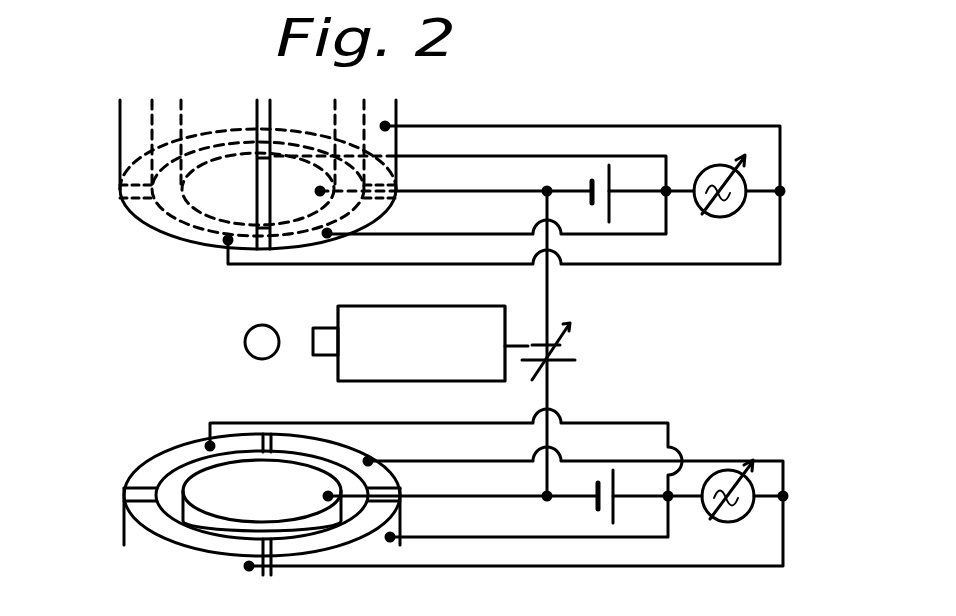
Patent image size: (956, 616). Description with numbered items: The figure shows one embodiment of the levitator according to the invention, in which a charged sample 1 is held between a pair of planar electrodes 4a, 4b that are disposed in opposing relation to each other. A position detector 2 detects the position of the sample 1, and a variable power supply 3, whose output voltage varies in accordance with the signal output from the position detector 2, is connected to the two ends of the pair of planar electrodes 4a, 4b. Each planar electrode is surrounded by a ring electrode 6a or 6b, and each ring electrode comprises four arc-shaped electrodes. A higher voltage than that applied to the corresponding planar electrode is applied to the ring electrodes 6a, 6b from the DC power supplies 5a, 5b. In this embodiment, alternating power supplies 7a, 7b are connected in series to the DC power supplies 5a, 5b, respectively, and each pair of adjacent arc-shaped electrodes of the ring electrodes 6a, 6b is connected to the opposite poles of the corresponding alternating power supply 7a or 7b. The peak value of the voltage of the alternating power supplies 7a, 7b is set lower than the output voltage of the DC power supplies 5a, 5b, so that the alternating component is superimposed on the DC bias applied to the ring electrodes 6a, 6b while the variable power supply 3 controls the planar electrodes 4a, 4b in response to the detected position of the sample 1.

The charged sample 1 is at (273, 322).
The position detector 2 is at (432, 302).
The variable power supply 3 is at (573, 345).
The planar electrode 4a is at (213, 477).
The planar electrode 4b is at (207, 202).
The DC power supply 5a is at (603, 473).
The DC power supply 5b is at (600, 213).
The ring electrode 6a is at (128, 482).
The ring electrode 6b is at (118, 185).
The alternating power supply 7a is at (710, 513).
The alternating power supply 7b is at (738, 212).